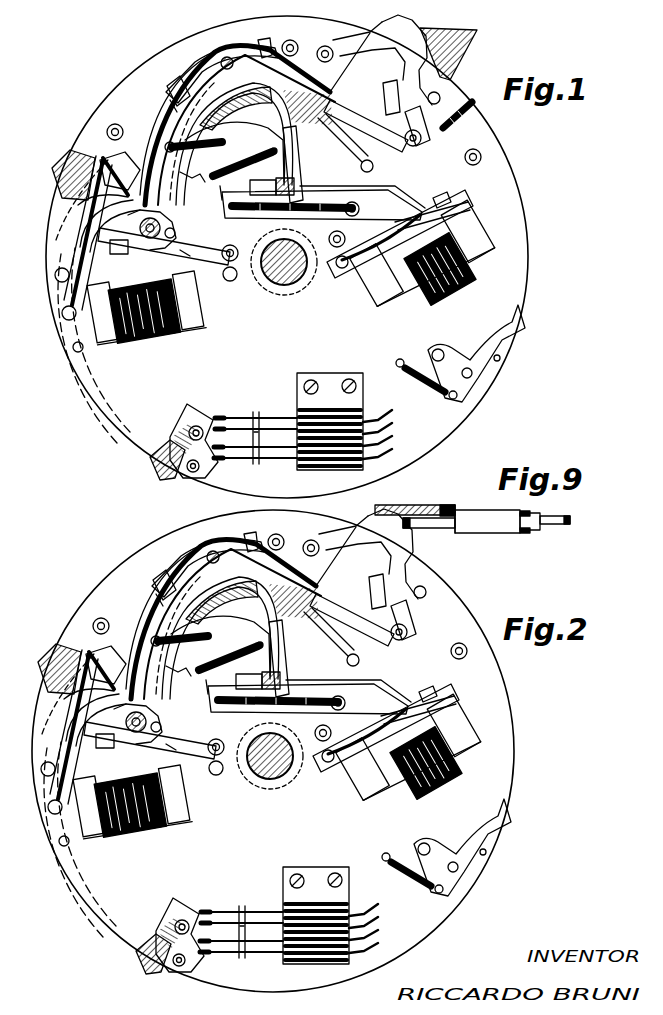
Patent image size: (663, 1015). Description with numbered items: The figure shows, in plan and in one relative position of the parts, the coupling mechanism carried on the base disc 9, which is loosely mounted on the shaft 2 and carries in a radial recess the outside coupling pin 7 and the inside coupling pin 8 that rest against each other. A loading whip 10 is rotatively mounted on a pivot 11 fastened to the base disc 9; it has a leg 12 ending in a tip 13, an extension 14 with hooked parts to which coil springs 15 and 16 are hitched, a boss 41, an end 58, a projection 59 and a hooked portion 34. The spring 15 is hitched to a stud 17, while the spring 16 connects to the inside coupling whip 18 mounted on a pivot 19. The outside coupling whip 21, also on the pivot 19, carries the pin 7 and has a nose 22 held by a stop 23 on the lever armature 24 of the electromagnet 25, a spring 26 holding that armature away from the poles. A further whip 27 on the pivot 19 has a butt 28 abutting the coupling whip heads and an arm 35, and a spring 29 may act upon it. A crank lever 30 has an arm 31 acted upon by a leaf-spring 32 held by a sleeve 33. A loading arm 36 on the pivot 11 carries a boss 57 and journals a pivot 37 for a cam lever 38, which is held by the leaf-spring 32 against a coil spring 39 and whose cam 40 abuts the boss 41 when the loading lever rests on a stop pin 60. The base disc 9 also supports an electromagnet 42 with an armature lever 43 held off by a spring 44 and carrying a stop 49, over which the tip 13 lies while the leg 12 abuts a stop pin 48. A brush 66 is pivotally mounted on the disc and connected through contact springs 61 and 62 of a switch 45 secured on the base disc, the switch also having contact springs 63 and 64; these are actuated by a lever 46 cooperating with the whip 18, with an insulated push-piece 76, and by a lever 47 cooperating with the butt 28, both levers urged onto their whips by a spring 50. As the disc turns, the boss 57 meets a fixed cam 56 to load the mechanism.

In FIG. 1, the shaft 2 is at (290, 285).
In FIG. 2, the shaft 2 is at (270, 770).
In FIG. 1, the outside coupling pin 7 is at (135, 230).
In FIG. 2, the outside coupling pin 7 is at (127, 724).
In FIG. 1, the inside coupling pin 8 is at (178, 230).
In FIG. 2, the inside coupling pin 8 is at (160, 722).
In FIG. 1, the base disc 9 is at (505, 192).
In FIG. 2, the base disc 9 is at (283, 751).
In FIG. 1, the loading whip 10 is at (293, 140).
In FIG. 9, the loading whip 10 is at (420, 505).
In FIG. 2, the loading whip 10 is at (282, 658).
In FIG. 1, the pivot 11 is at (343, 40).
In FIG. 2, the pivot 11 is at (353, 548).
In FIG. 1, the leg 12 is at (396, 190).
In FIG. 2, the leg 12 is at (355, 685).
In FIG. 1, the tip 13 is at (424, 216).
In FIG. 2, the tip 13 is at (404, 708).
In FIG. 1, the extension 14 is at (224, 205).
In FIG. 2, the extension 14 is at (307, 700).
In FIG. 1, the coil spring 15 is at (306, 212).
In FIG. 2, the coil spring 15 is at (278, 709).
In FIG. 1, the coil spring 16 is at (240, 166).
In FIG. 2, the coil spring 16 is at (231, 656).
In FIG. 1, the stud 17 is at (360, 209).
In FIG. 2, the stud 17 is at (345, 712).
In FIG. 1, the inside coupling whip 18 is at (112, 160).
In FIG. 2, the inside coupling whip 18 is at (156, 646).
In FIG. 1, the pivot 19 is at (222, 58).
In FIG. 2, the pivot 19 is at (193, 535).
In FIG. 1, the outside coupling whip 21 is at (160, 138).
In FIG. 2, the outside coupling whip 21 is at (248, 619).
In FIG. 1, the nose 22 is at (165, 258).
In FIG. 2, the nose 22 is at (150, 750).
In FIG. 1, the stop 23 is at (136, 255).
In FIG. 2, the stop 23 is at (109, 756).
In FIG. 1, the lever armature 24 is at (185, 252).
In FIG. 2, the lever armature 24 is at (180, 742).
In FIG. 1, the electromagnet 25 is at (196, 308).
In FIG. 2, the electromagnet 25 is at (144, 801).
In FIG. 1, the spring 26 is at (231, 281).
In FIG. 2, the spring 26 is at (229, 786).
In FIG. 1, the whip 27 is at (172, 92).
In FIG. 2, the whip 27 is at (140, 563).
In FIG. 1, the butt 28 is at (92, 193).
In FIG. 2, the butt 28 is at (70, 669).
In FIG. 1, the spring 29 is at (198, 143).
In FIG. 2, the spring 29 is at (194, 633).
In FIG. 1, the crank lever 30 is at (205, 60).
In FIG. 2, the crank lever 30 is at (204, 556).
In FIG. 1, the arm 31 is at (160, 110).
In FIG. 2, the arm 31 is at (140, 617).
In FIG. 1, the leaf-spring 32 is at (185, 78).
In FIG. 2, the leaf-spring 32 is at (184, 552).
In FIG. 1, the sleeve 33 is at (108, 126).
In FIG. 2, the sleeve 33 is at (280, 628).
In FIG. 1, the hooked portion 34 is at (258, 42).
In FIG. 2, the hooked portion 34 is at (241, 528).
In FIG. 1, the arm 35 is at (266, 108).
In FIG. 2, the arm 35 is at (252, 604).
In FIG. 1, the loading arm 36 is at (380, 85).
In FIG. 9, the loading arm 36 is at (535, 533).
In FIG. 2, the loading arm 36 is at (394, 598).
In FIG. 1, the pivot 37 is at (422, 135).
In FIG. 9, the pivot 37 is at (525, 533).
In FIG. 2, the pivot 37 is at (376, 627).
In FIG. 1, the cam lever 38 is at (389, 132).
In FIG. 9, the cam lever 38 is at (484, 510).
In FIG. 2, the cam lever 38 is at (403, 620).
In FIG. 1, the coil spring 39 is at (470, 131).
In FIG. 1, the cam 40 is at (352, 120).
In FIG. 9, the cam 40 is at (456, 508).
In FIG. 2, the cam 40 is at (352, 620).
In FIG. 1, the boss 41 is at (343, 138).
In FIG. 9, the boss 41 is at (440, 528).
In FIG. 2, the boss 41 is at (337, 611).
In FIG. 1, the electromagnet 42 is at (384, 288).
In FIG. 2, the electromagnet 42 is at (413, 755).
In FIG. 1, the armature lever 43 is at (466, 196).
In FIG. 2, the armature lever 43 is at (395, 721).
In FIG. 1, the spring 44 is at (340, 270).
In FIG. 2, the spring 44 is at (350, 758).
In FIG. 1, the terminal block 45 is at (363, 402).
In FIG. 2, the terminal block 45 is at (332, 915).
In FIG. 1, the lever 46 is at (80, 170).
In FIG. 2, the lever 46 is at (90, 816).
In FIG. 1, the lever 47 is at (80, 212).
In FIG. 2, the lever 47 is at (106, 811).
In FIG. 1, the stop pin 48 is at (361, 168).
In FIG. 2, the stop pin 48 is at (335, 662).
In FIG. 1, the stop 49 is at (438, 199).
In FIG. 2, the stop 49 is at (420, 708).
In FIG. 1, the spring 50 is at (70, 239).
In FIG. 2, the spring 50 is at (47, 695).
In FIG. 1, the cam 56 is at (466, 48).
In FIG. 1, the boss 57 is at (407, 42).
In FIG. 2, the boss 57 is at (393, 554).
In FIG. 1, the end 58 is at (178, 190).
In FIG. 2, the end 58 is at (178, 682).
In FIG. 1, the projection 59 is at (296, 185).
In FIG. 2, the projection 59 is at (269, 674).
In FIG. 1, the stop pin 60 is at (440, 95).
In FIG. 2, the stop pin 60 is at (436, 583).
In FIG. 1, the contact spring 61 is at (238, 416).
In FIG. 2, the contact spring 61 is at (242, 898).
In FIG. 1, the contact spring 62 is at (262, 420).
In FIG. 2, the contact spring 62 is at (254, 915).
In FIG. 1, the contact spring 63 is at (283, 460).
In FIG. 2, the contact spring 63 is at (245, 965).
In FIG. 1, the contact spring 64 is at (232, 461).
In FIG. 2, the contact spring 64 is at (239, 960).
In FIG. 1, the brush 66 is at (472, 350).
In FIG. 2, the brush 66 is at (446, 847).
In FIG. 1, the insulated push-piece 76 is at (256, 462).
In FIG. 2, the insulated push-piece 76 is at (234, 952).